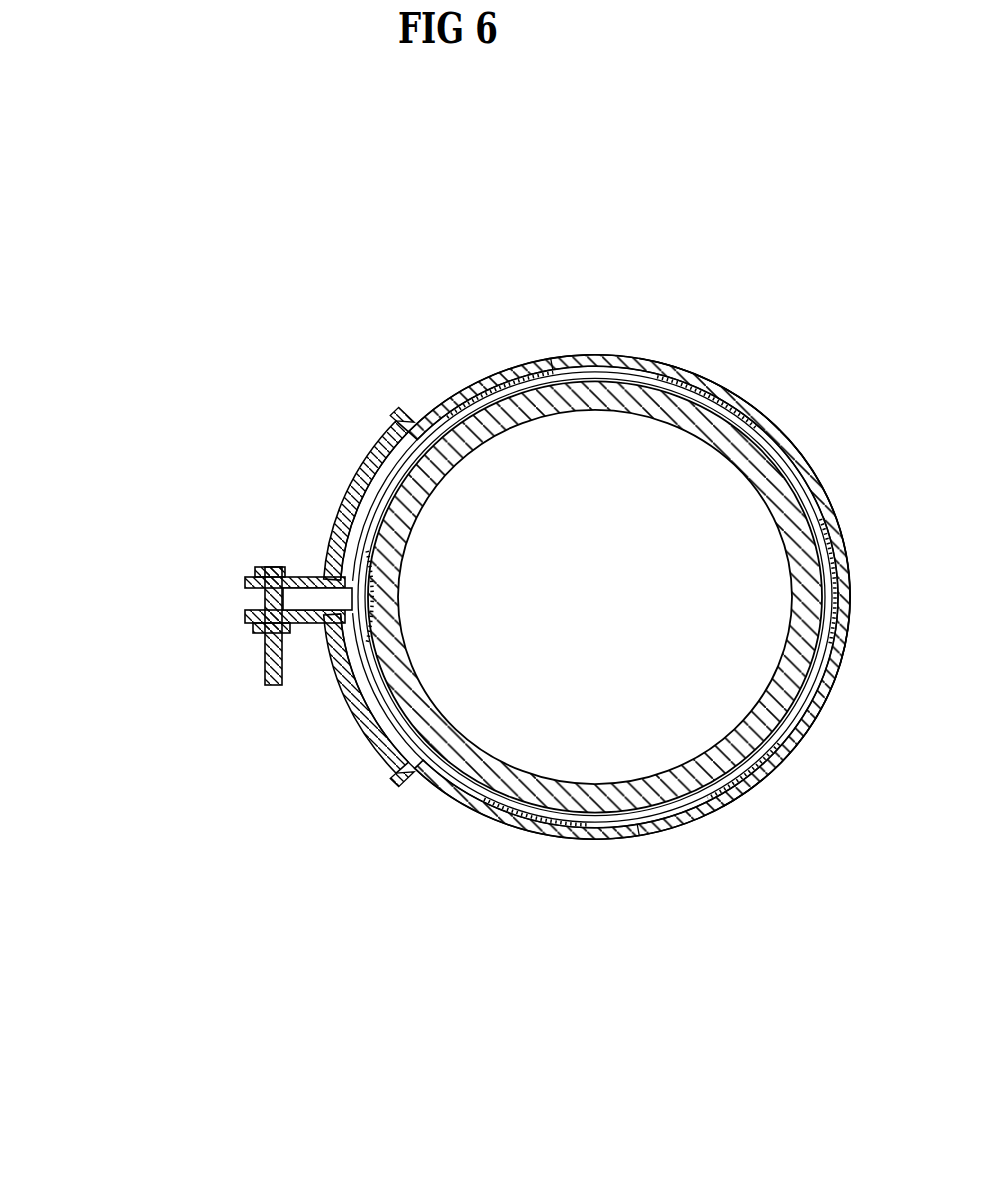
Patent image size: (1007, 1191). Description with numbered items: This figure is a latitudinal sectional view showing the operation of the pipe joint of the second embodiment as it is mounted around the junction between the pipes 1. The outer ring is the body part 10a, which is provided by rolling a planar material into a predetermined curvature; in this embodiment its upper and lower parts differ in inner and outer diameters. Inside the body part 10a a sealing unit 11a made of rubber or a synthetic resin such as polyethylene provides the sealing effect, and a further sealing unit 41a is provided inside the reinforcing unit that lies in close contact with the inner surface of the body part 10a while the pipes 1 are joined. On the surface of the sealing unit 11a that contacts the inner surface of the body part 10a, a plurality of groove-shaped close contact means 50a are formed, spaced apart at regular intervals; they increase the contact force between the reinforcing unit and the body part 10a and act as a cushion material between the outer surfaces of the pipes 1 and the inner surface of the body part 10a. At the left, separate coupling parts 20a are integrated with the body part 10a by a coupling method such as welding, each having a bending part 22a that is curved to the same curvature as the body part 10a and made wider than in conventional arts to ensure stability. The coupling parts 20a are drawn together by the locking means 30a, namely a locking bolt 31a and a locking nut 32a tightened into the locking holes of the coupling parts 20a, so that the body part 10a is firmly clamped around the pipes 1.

The pipe 1 is at (738, 772).
The body part 10a is at (577, 356).
The sealing unit 11a is at (712, 383).
The coupling part 20a is at (276, 533).
The bending part 22a is at (358, 472).
The locking means 30a is at (153, 639).
The locking bolt 31a is at (265, 684).
The locking nut 32a is at (253, 628).
The sealing unit 41a is at (355, 598).
The close contact means 50a is at (687, 815).